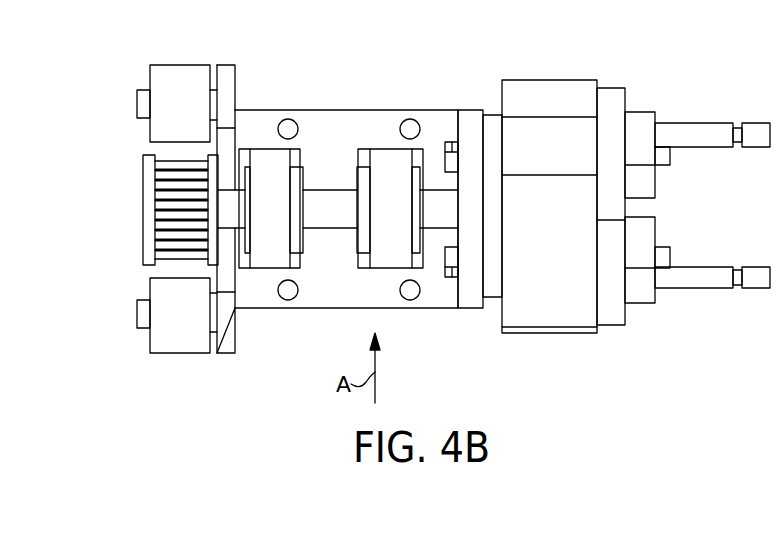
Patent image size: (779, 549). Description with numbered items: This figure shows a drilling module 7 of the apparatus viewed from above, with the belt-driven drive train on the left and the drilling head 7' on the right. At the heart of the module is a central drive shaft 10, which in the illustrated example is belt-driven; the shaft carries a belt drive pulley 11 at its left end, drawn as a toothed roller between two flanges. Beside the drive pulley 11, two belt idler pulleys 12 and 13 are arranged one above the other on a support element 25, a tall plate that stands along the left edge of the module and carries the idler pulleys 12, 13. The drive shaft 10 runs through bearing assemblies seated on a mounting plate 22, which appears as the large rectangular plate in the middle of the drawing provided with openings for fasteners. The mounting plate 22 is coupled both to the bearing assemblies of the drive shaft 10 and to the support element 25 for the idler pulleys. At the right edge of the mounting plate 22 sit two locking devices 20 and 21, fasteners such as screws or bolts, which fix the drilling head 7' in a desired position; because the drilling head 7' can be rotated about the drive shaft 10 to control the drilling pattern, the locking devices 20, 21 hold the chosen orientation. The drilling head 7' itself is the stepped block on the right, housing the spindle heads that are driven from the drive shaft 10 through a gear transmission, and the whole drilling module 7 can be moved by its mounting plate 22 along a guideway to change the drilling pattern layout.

The drilling module 7 is at (614, 162).
The drilling head 7' is at (549, 188).
The central drive shaft 10 is at (327, 202).
The belt drive pulley 11 is at (162, 187).
The belt idler pulley 12 is at (167, 83).
The belt idler pulley 13 is at (160, 292).
The locking device 20 is at (447, 142).
The locking device 21 is at (455, 274).
The mounting plate 22 is at (430, 293).
The support element 25 is at (227, 88).